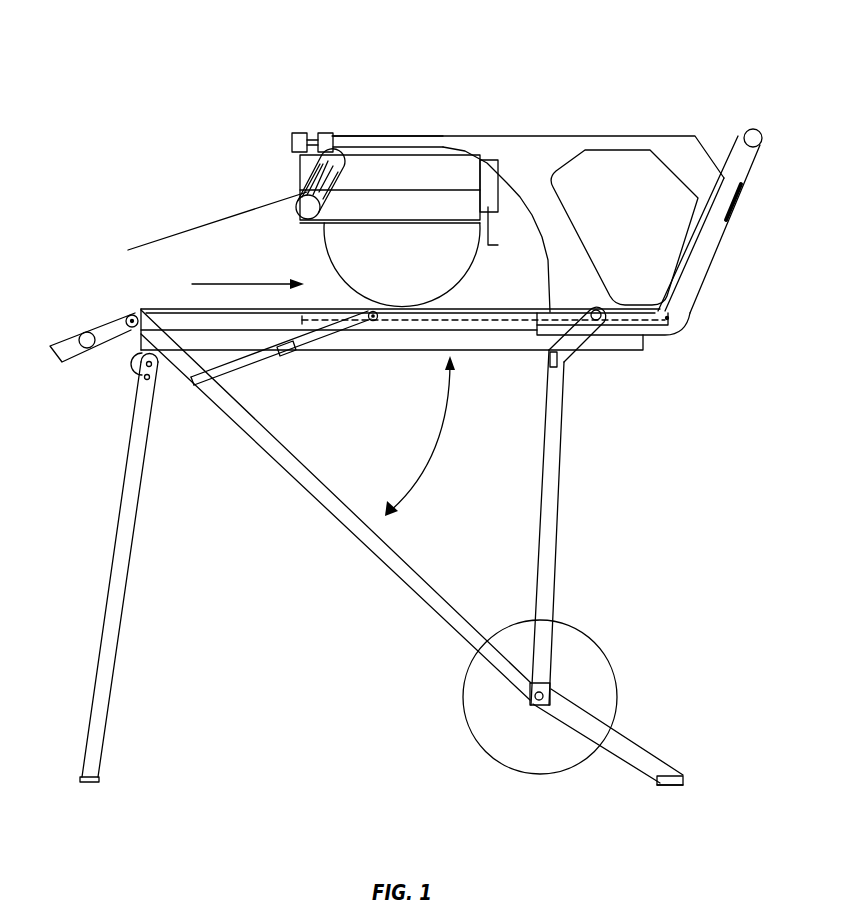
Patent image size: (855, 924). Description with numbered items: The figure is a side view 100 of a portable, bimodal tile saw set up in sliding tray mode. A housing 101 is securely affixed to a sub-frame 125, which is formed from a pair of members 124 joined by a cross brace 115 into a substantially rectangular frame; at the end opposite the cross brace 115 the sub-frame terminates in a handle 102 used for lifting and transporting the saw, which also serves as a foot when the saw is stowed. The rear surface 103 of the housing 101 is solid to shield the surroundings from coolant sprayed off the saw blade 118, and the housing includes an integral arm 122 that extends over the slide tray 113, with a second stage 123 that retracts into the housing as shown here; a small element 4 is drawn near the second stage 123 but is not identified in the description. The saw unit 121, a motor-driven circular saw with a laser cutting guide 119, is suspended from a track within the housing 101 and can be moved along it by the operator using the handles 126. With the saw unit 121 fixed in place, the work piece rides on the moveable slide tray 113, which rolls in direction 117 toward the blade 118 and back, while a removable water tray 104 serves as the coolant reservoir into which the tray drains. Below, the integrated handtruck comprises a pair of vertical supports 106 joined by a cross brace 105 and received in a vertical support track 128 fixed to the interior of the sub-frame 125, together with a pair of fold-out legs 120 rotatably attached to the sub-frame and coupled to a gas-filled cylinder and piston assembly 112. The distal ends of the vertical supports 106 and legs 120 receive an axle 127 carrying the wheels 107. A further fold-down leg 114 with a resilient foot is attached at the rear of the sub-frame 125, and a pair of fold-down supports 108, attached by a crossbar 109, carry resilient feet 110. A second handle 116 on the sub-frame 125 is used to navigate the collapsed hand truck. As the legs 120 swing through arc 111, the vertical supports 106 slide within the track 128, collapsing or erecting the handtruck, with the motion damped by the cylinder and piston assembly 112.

The view of portable bimodal tile saw 100 is at (605, 47).
The housing 101 is at (523, 143).
The handle 102 is at (758, 130).
The rear surface of the housing 103 is at (708, 268).
The removable water tray 104 is at (612, 351).
The cross brace 105 is at (557, 368).
The vertical supports 106 is at (557, 460).
The wheels 107 is at (587, 662).
The fold-down supports 108 is at (622, 736).
The crossbar 109 is at (670, 775).
The resilient feet 110 is at (685, 780).
The arc 111 is at (433, 440).
The gas-filled cylinder and piston assembly 112 is at (232, 368).
The slide tray 113 is at (288, 345).
The fold-down leg 114 is at (109, 571).
The cross brace 115 is at (131, 312).
The second handle 116 is at (63, 362).
The direction 117 is at (248, 283).
The saw blade 118 is at (328, 265).
The laser cutting guide 119 is at (218, 221).
The fold-out legs 120 is at (362, 547).
The saw unit 121 is at (435, 160).
The arm 122 is at (377, 135).
The second stage 123 is at (302, 132).
The sub-frame members 124 is at (718, 217).
The sub-frame 125 is at (674, 320).
The handles 126 is at (293, 202).
The axle 127 is at (528, 698).
The vertical support track 128 is at (453, 311).
The knob 4 is at (327, 132).